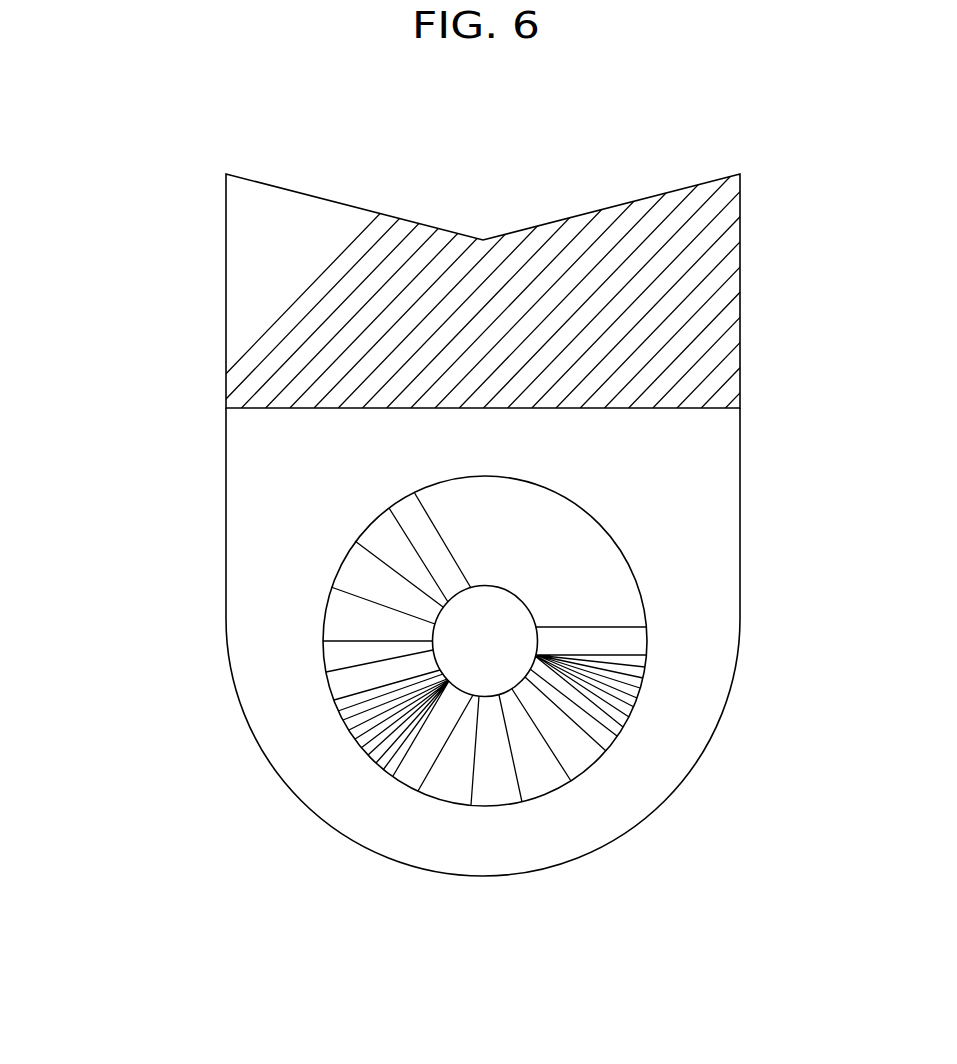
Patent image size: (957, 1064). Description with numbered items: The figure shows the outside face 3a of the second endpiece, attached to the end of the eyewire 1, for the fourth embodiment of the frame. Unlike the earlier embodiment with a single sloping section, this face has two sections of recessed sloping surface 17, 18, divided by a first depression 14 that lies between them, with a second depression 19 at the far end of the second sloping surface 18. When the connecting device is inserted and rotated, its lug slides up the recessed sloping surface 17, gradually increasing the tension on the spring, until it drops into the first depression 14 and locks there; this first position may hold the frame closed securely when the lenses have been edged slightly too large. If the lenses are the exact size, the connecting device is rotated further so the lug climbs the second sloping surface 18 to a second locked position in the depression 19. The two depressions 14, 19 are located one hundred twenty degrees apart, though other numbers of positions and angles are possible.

The eyewire 1 is at (518, 283).
The outside face 3a is at (393, 639).
The first depression 14 is at (269, 768).
The recessed sloping surface 17 is at (692, 770).
The second sloping surface 18 is at (252, 568).
The second depression 19 is at (648, 495).